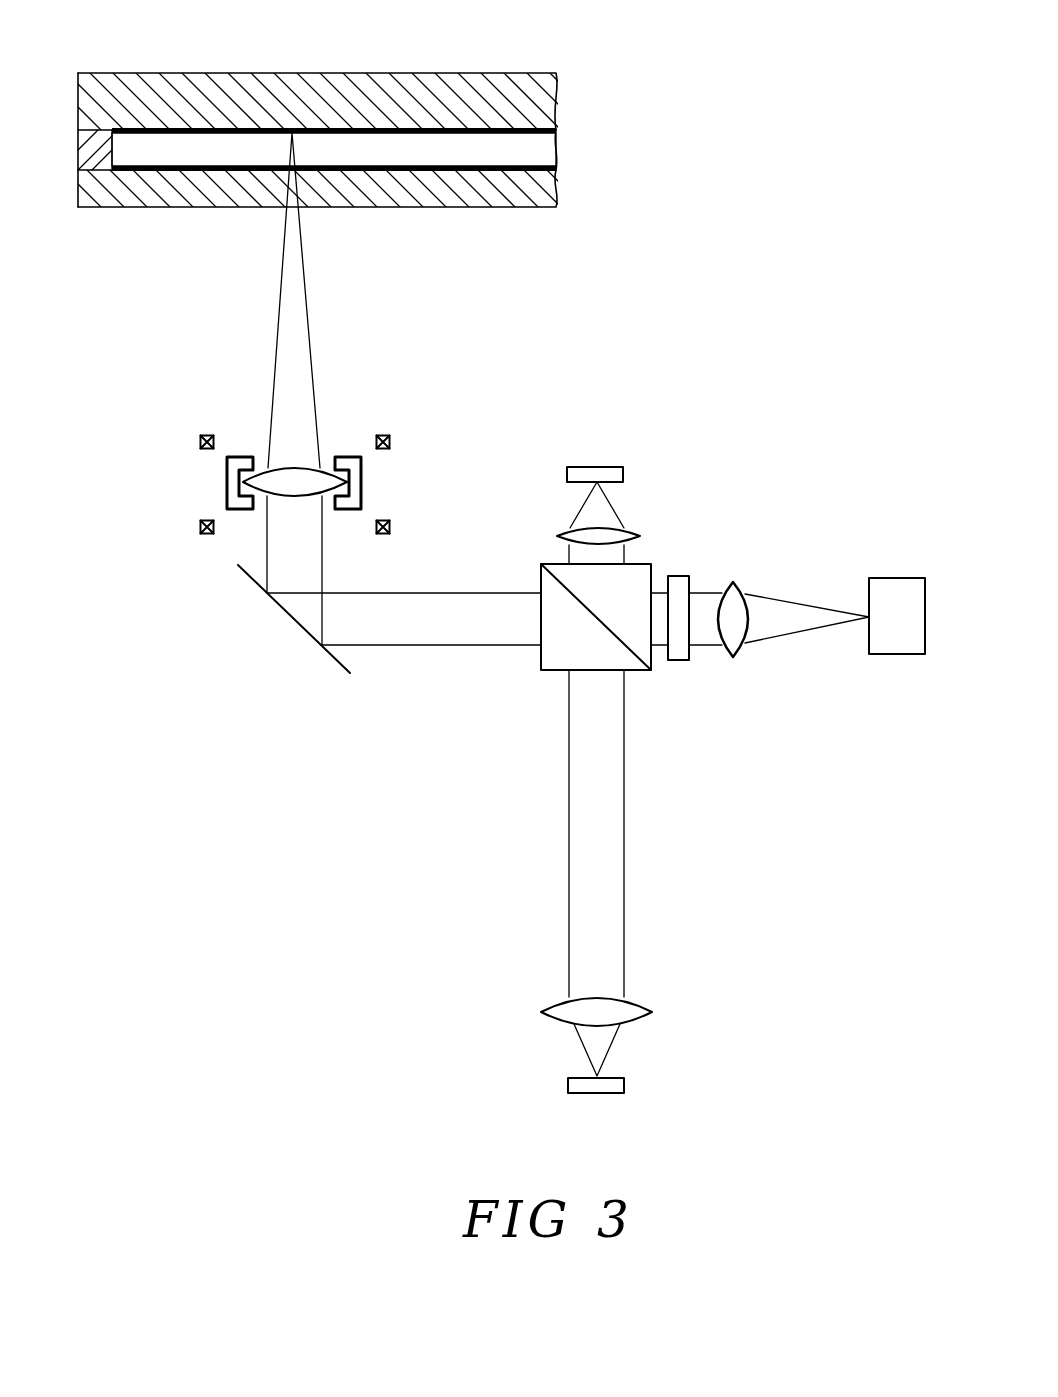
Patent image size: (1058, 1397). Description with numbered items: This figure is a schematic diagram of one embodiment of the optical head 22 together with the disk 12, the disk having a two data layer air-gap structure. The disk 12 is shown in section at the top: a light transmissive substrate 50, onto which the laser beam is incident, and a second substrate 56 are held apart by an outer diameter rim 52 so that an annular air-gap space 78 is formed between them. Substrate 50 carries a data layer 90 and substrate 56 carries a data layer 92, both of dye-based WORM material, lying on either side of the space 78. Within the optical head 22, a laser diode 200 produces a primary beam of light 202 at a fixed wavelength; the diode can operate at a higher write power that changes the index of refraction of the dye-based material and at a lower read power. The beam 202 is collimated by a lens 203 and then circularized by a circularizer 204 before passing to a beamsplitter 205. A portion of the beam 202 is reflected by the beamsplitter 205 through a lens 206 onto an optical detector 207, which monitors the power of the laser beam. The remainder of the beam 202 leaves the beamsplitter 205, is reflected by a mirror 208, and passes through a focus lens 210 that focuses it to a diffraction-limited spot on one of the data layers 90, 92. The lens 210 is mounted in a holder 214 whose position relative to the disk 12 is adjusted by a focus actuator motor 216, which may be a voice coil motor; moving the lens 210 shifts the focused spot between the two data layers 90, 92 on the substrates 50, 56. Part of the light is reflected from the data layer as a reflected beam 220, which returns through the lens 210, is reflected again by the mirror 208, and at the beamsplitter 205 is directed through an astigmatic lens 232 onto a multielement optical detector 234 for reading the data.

The disk 12 is at (337, 191).
The optical head 22 is at (563, 618).
The substrate 50 is at (492, 190).
The outer diameter rim 52 is at (88, 155).
The second substrate 56 is at (488, 93).
The air-gap spaces 78 is at (357, 143).
The data layer 90 is at (157, 172).
The data layer 92 is at (160, 130).
The laser diode 200 is at (900, 575).
The primary beam of light 202 is at (823, 617).
The lens 203 is at (737, 582).
The circularizer 204 is at (680, 602).
The beamsplitter 205 is at (541, 575).
The lens 206 is at (557, 537).
The optical detector 207 is at (588, 462).
The mirror 208 is at (294, 625).
The focus lens 210 is at (325, 497).
The holder 214 is at (353, 455).
The focus actuator motor 216 is at (395, 443).
The reflected beam 220 is at (569, 706).
The astigmatic lens 232 is at (652, 1012).
The multielement optical detector 234 is at (625, 1087).